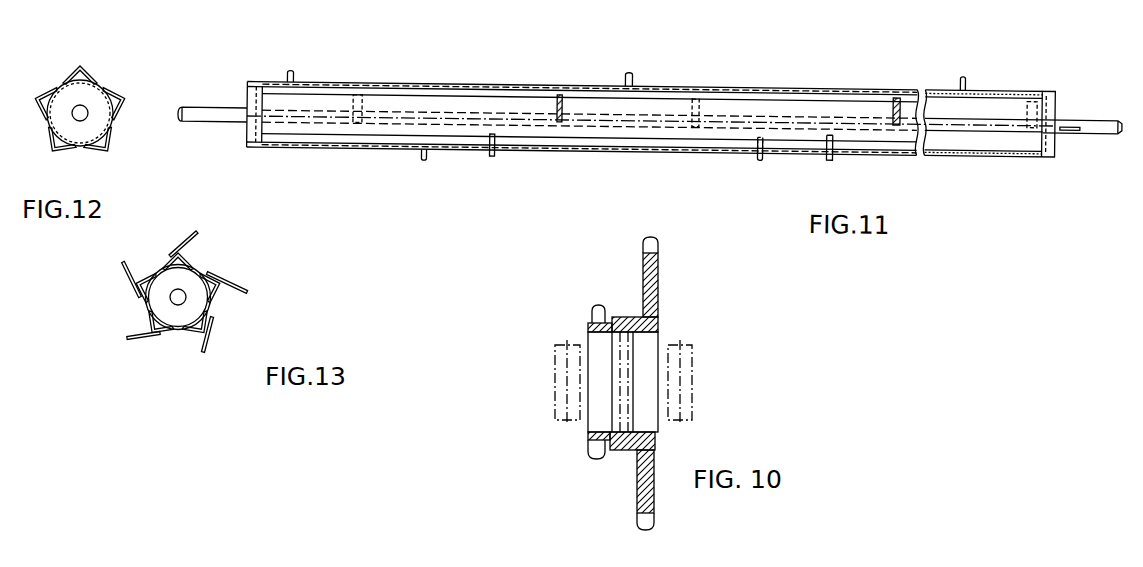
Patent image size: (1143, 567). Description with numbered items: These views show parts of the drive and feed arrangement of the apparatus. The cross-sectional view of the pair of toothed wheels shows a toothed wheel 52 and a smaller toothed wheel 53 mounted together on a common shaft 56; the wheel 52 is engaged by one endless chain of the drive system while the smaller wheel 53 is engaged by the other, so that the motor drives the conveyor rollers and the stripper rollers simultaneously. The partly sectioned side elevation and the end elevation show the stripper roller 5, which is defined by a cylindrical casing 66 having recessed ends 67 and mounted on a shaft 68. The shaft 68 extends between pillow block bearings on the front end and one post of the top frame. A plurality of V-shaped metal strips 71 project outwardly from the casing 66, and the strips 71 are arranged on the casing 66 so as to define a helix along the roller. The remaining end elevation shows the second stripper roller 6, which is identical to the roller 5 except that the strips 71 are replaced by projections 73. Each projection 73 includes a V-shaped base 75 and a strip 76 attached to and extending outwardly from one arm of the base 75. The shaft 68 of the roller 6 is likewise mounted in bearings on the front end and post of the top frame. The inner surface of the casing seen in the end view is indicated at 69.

In FIG. 12, the stripper roller 5 is at (50, 124).
In FIG. 11, the stripper roller 5 is at (707, 82).
In FIG. 13, the stripper roller 6 is at (200, 272).
In FIG. 10, the toothed wheel 52 is at (659, 243).
In FIG. 10, the toothed wheel 53 is at (599, 306).
In FIG. 10, the common shaft 56 is at (590, 343).
In FIG. 12, the cylindrical casing 66 is at (112, 123).
In FIG. 11, the cylindrical casing 66 is at (1000, 82).
In FIG. 11, the recessed ends 67 is at (255, 120).
In FIG. 12, the shaft 68 is at (86, 107).
In FIG. 13, the shaft 68 is at (172, 290).
In FIG. 11, the shaft 68 is at (224, 108).
In FIG. 13, the inner tube 69 is at (146, 298).
In FIG. 12, the V-shaped metal strips 71 is at (55, 86).
In FIG. 11, the V-shaped metal strips 71 is at (294, 72).
In FIG. 13, the projections 73 is at (224, 276).
In FIG. 13, the V-shaped base 75 is at (146, 282).
In FIG. 13, the strips 76 is at (122, 262).